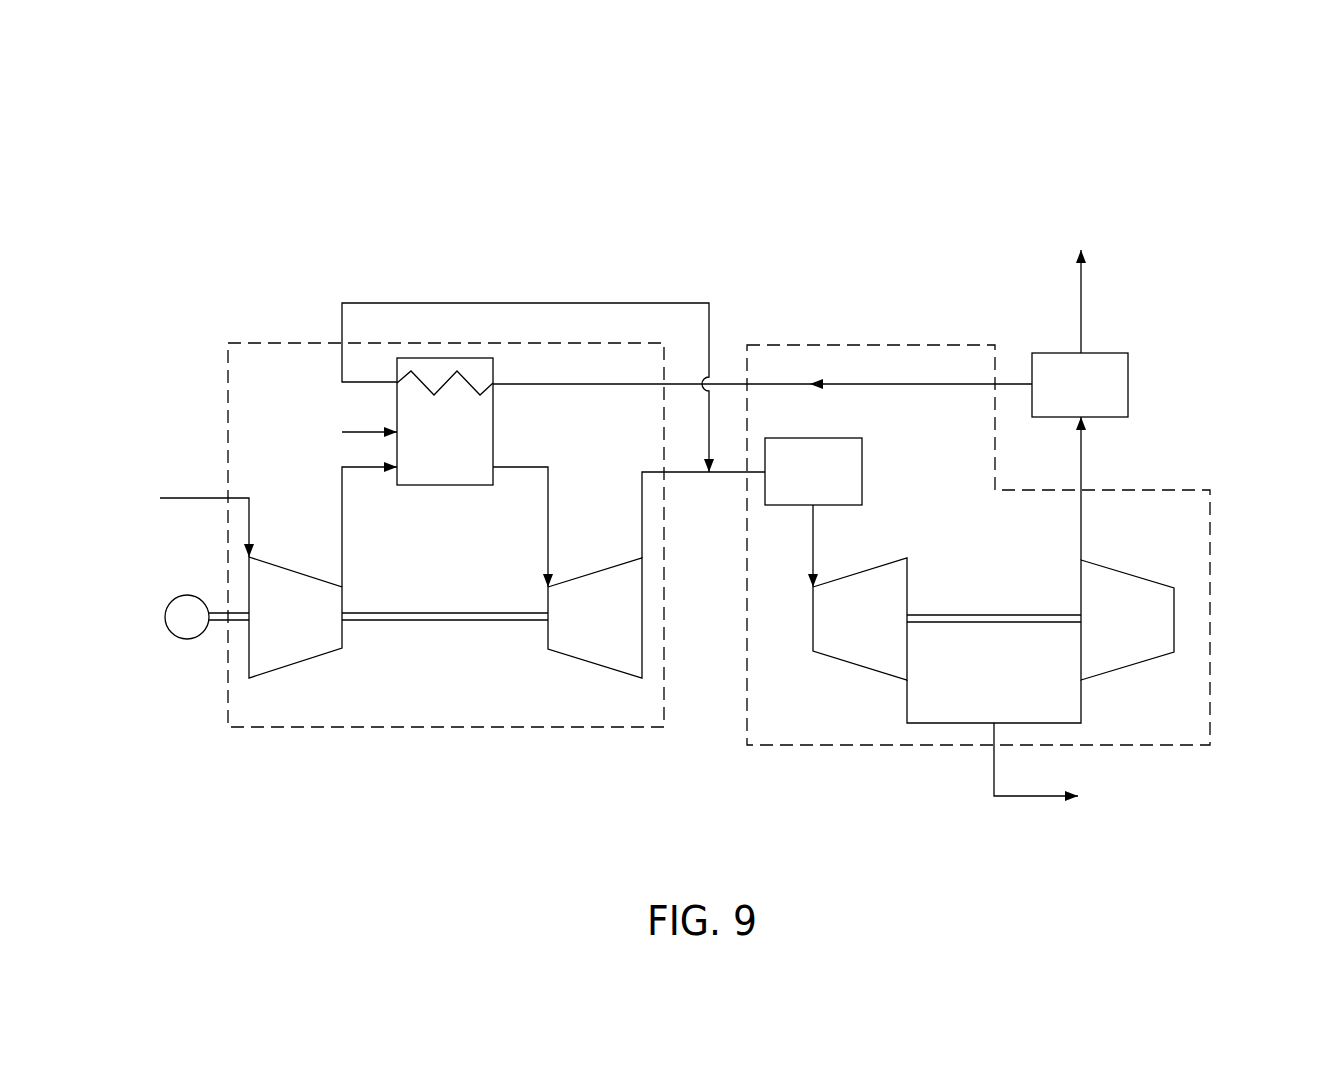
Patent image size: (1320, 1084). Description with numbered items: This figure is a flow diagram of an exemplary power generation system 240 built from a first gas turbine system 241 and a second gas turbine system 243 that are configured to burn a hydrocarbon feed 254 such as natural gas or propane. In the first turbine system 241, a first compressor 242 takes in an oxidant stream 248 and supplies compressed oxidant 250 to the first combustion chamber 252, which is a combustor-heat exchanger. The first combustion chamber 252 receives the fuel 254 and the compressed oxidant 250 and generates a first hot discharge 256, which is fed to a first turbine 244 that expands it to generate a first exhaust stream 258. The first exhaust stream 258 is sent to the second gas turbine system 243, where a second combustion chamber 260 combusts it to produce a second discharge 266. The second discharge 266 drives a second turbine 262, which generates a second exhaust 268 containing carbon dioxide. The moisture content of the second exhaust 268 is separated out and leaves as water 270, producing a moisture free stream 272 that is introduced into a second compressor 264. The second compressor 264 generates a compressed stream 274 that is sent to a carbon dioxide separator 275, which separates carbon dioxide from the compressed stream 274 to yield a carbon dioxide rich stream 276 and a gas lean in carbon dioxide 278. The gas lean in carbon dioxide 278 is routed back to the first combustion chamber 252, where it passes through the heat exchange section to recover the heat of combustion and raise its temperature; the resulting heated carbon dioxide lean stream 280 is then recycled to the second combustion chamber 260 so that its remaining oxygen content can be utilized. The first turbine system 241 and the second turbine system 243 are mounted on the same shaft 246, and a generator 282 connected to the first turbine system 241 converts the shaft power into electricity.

The power generation system 240 is at (246, 138).
The first gas turbine system 241 is at (250, 343).
The first compressor 242 is at (305, 664).
The second gas turbine system 243 is at (1210, 565).
The first turbine 244 is at (568, 656).
The shaft 246 is at (447, 625).
The air inlet 248 is at (185, 498).
The compressed oxidant 250 is at (342, 527).
The first combustion chamber 252 is at (459, 486).
The hydrocarbon feed 254 is at (360, 432).
The first hot discharge 256 is at (548, 512).
The first exhaust stream 258 is at (642, 492).
The second combustion chamber 260 is at (862, 485).
The second turbine T2 262 is at (860, 667).
The second compressor 264 is at (1128, 670).
The second discharge 266 is at (813, 530).
The second exhaust 268 is at (960, 723).
The water outlet 270 is at (1035, 797).
The moisture free stream 272 is at (1038, 723).
The compressed stream 274 is at (1081, 515).
The CO2 separator 275 is at (1128, 386).
The CO2 rich stream 276 is at (1081, 302).
The gas lean in CO2 278 is at (908, 386).
The heated CO2 lean stream 280 is at (527, 303).
The generator 282 is at (187, 639).